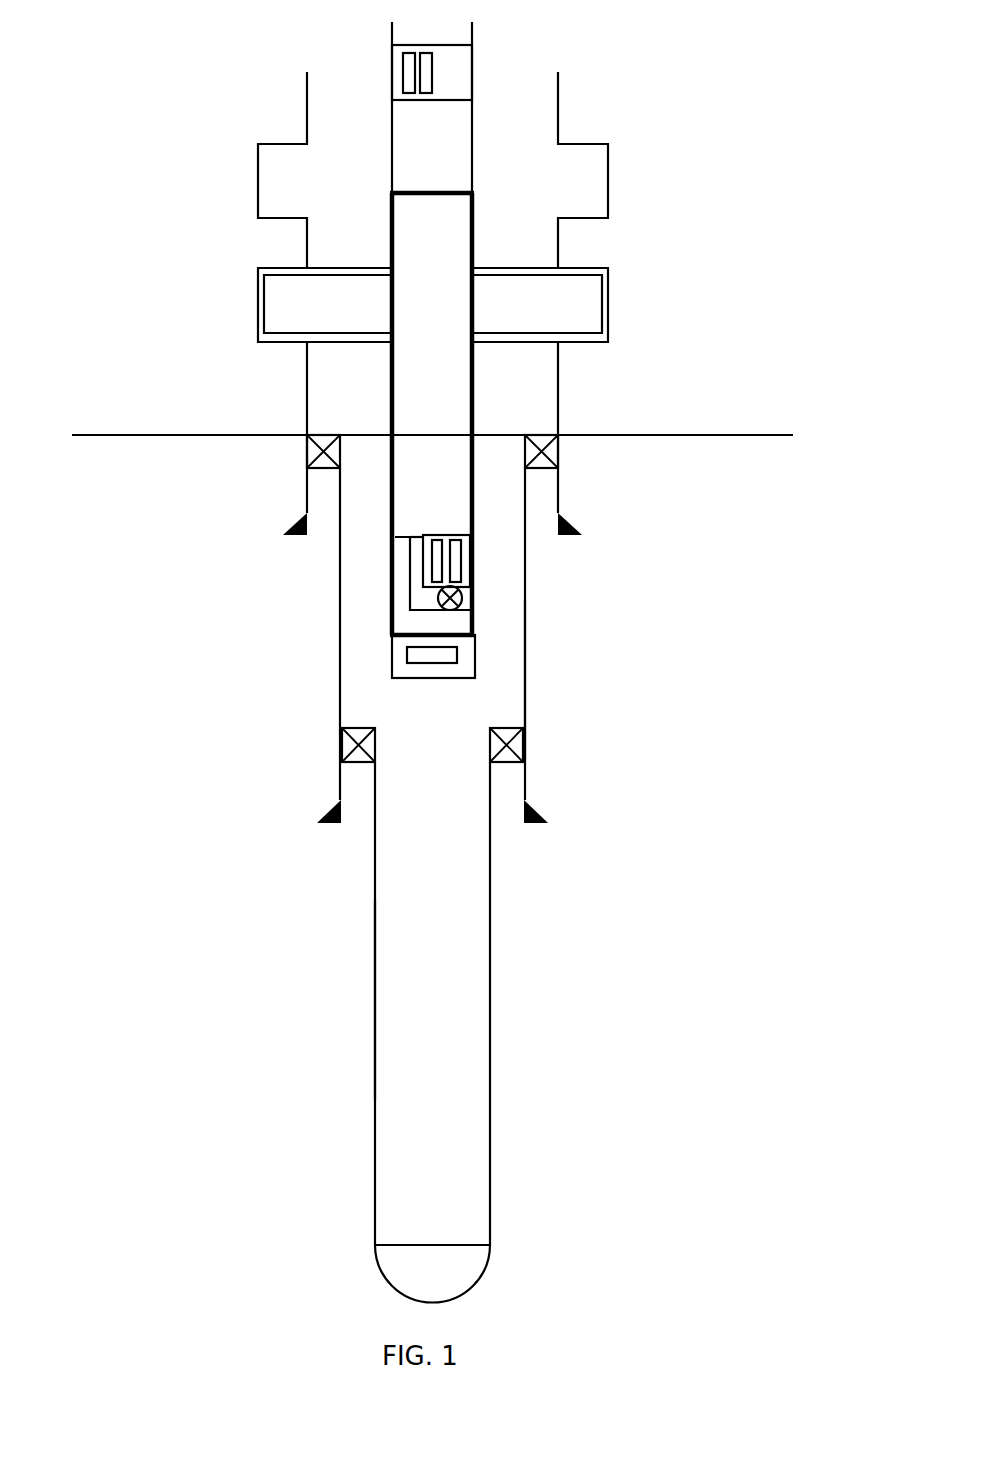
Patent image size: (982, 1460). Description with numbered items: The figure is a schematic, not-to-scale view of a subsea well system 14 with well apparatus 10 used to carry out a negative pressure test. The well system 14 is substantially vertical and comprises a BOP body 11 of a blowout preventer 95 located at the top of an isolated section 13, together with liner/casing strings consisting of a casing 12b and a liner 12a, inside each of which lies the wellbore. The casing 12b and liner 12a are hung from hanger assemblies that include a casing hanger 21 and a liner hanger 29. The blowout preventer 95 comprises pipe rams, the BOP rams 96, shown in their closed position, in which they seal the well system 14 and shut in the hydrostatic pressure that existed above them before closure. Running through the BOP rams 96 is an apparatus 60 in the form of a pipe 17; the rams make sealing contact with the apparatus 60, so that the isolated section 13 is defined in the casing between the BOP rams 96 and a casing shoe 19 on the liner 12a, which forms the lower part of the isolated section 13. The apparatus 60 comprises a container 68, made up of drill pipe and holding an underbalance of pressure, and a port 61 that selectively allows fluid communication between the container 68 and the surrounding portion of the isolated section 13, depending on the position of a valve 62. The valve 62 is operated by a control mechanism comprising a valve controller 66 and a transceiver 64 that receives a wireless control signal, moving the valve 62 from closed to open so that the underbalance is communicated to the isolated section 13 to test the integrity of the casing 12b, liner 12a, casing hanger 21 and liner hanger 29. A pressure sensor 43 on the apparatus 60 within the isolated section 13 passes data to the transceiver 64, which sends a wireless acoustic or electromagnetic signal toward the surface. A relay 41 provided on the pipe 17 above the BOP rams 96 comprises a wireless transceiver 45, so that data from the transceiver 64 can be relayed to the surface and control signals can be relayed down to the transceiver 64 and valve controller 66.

The well apparatus 10 is at (728, 127).
The blowout preventer 95 is at (225, 215).
The BOP rams 96 is at (577, 312).
The BOP body 11 is at (307, 410).
The casing hanger 21 is at (552, 452).
The well system 14 is at (358, 577).
The casing 12b is at (527, 690).
The liner hanger 29 is at (517, 747).
The isolated section 13 is at (452, 907).
The liner 12a is at (373, 1002).
The casing shoe 19 is at (457, 1270).
The apparatus 60 is at (516, 381).
The container 68 is at (442, 427).
The relay 41 is at (457, 73).
The wireless transceiver 45 is at (403, 72).
The valve 62 is at (438, 600).
The valve controller 66 is at (463, 560).
The transceiver 64 is at (430, 562).
The port 61 is at (463, 598).
The pipe 17 is at (477, 662).
The pressure sensor 43 is at (440, 665).